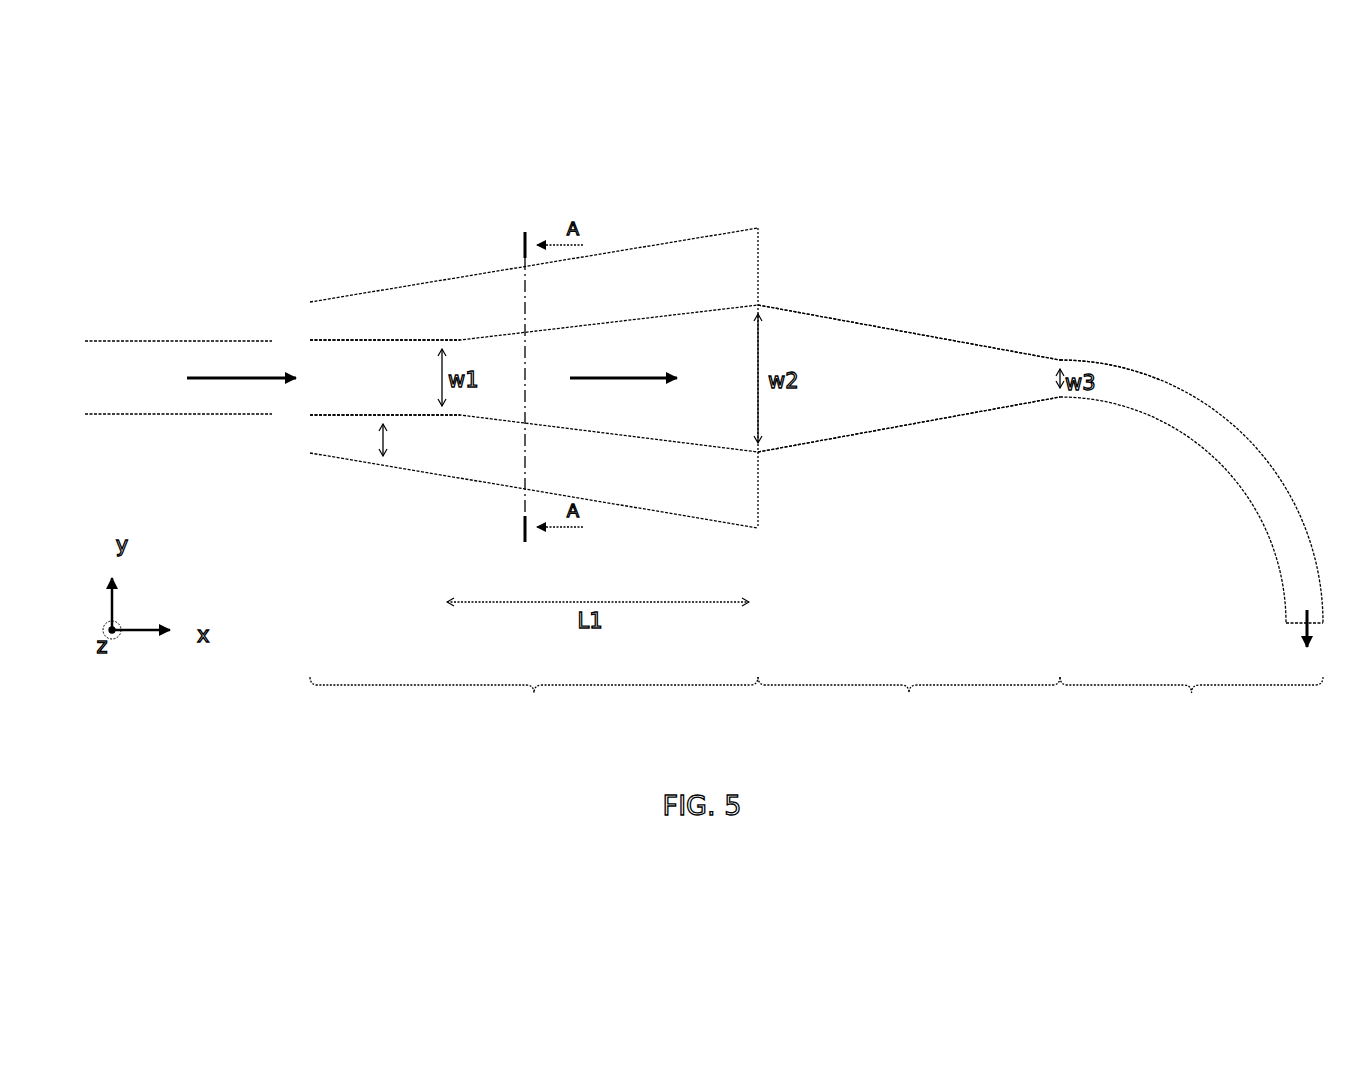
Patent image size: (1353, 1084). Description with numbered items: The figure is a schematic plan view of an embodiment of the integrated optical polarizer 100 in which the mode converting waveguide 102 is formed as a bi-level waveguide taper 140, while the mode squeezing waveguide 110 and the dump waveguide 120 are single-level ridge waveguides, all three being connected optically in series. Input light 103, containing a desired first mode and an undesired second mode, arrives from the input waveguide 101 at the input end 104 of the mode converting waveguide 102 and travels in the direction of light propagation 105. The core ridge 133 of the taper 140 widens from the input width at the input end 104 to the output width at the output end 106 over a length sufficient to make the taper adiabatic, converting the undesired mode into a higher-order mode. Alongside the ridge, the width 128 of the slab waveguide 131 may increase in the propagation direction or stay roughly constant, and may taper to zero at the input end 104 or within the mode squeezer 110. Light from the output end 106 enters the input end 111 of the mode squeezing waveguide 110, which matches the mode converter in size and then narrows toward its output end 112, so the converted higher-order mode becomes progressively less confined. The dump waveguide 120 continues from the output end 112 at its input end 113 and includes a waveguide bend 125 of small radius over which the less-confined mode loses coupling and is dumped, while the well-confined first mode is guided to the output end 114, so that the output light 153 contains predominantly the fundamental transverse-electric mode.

The integrated optical polarizer 100 is at (1060, 238).
The input waveguide 101 is at (133, 341).
The mode converting waveguide 102 is at (534, 712).
The input light 103 is at (213, 380).
The input end 104 is at (308, 383).
The direction of light propagation 105 is at (637, 378).
The output end 106 is at (752, 408).
The mode squeezing waveguide 110 is at (909, 712).
The input end 111 is at (762, 345).
The output end 112 is at (1053, 387).
The input end 113 is at (1060, 372).
The output end 114 is at (1300, 620).
The dump waveguide 120 is at (1191, 711).
The waveguide bend 125 is at (1200, 483).
The width of the slab waveguide 128 is at (373, 440).
The slab waveguide 131 is at (440, 473).
The core ridge 133 is at (635, 438).
The bi-level waveguide taper 140 is at (452, 240).
The output light 153 is at (1303, 633).